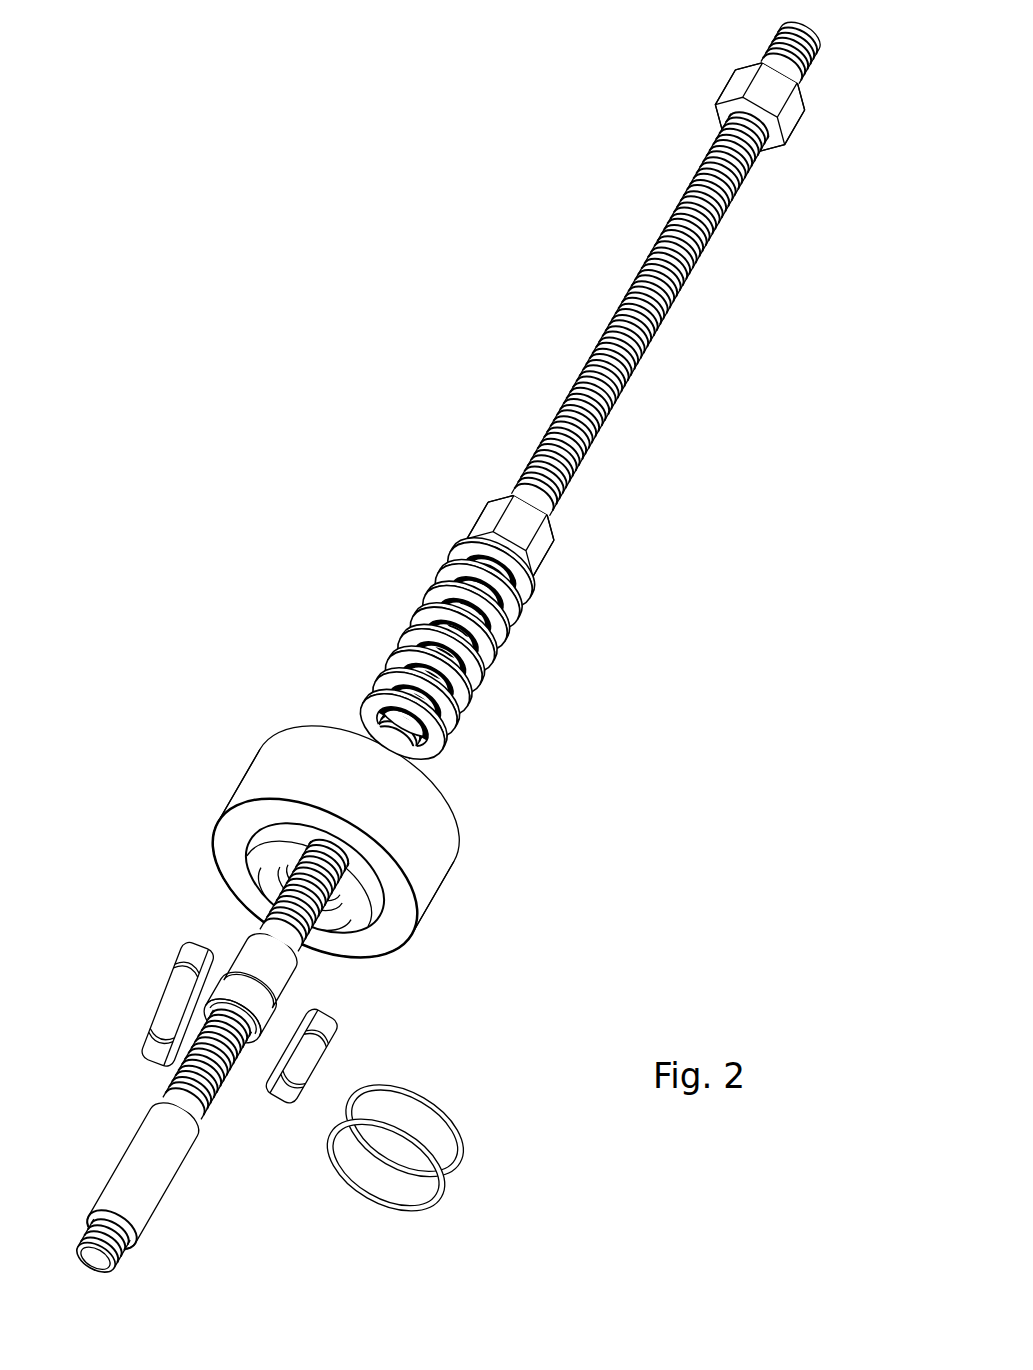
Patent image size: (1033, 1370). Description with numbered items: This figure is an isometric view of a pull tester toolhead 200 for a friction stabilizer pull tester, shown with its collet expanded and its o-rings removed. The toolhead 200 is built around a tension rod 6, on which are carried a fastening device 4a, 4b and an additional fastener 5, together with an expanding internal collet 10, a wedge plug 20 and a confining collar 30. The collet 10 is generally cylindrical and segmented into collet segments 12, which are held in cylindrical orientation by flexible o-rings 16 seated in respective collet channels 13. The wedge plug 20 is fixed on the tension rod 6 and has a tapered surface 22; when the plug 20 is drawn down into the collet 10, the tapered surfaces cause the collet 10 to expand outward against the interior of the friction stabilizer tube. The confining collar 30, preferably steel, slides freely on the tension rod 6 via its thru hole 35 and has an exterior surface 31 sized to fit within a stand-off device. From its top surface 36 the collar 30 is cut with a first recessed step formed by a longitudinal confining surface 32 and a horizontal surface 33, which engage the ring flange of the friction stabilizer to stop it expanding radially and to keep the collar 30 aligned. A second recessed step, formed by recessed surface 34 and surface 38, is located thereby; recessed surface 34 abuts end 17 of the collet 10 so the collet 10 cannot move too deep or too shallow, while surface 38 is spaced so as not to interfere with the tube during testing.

The pull tester toolhead 200 is at (677, 773).
The additional fastener 5 is at (802, 120).
The tension rod 6 is at (643, 361).
The fastening device 4a is at (551, 561).
The fastening device 4b is at (508, 628).
The confining collar 30 is at (259, 788).
The exterior surface 31 is at (445, 851).
The horizontal surface 33 is at (383, 913).
The top surface 36 is at (382, 944).
The longitudinal confining surface 32 is at (337, 924).
The thru hole 35 is at (260, 829).
The recessed surface 34 is at (280, 854).
The surface 38 is at (285, 868).
The collet segments 12 is at (262, 923).
The expanding collet 10 is at (176, 974).
The collet channels 13 is at (190, 953).
The end of collet 17 is at (318, 1009).
The o-rings 16 is at (463, 1150).
The tapered surface 22 is at (177, 1180).
The wedge plug 20 is at (123, 1187).